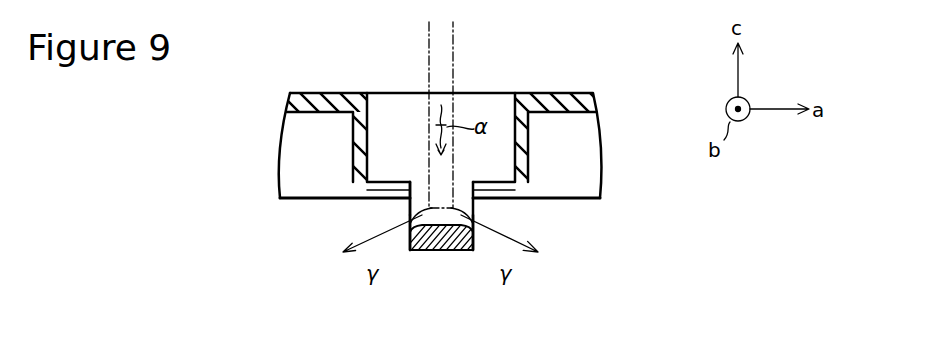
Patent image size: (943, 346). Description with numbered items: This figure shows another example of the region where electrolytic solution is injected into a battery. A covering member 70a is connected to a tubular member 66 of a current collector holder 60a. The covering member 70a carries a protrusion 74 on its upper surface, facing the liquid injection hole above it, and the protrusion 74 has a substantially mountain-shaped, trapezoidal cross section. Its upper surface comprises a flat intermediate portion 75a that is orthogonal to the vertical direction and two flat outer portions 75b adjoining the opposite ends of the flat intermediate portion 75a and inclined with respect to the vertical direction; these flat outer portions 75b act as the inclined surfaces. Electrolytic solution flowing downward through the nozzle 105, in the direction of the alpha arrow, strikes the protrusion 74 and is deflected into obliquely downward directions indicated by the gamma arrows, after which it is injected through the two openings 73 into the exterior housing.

The nozzle 105 is at (428, 53).
The current collector holder 60a is at (549, 88).
The tubular member 66 is at (528, 128).
The openings 73 is at (367, 190).
The protrusion 74 is at (476, 205).
The flat intermediate portion 75a is at (410, 202).
The flat outer portions 75b is at (410, 230).
The covering member 70a is at (442, 252).